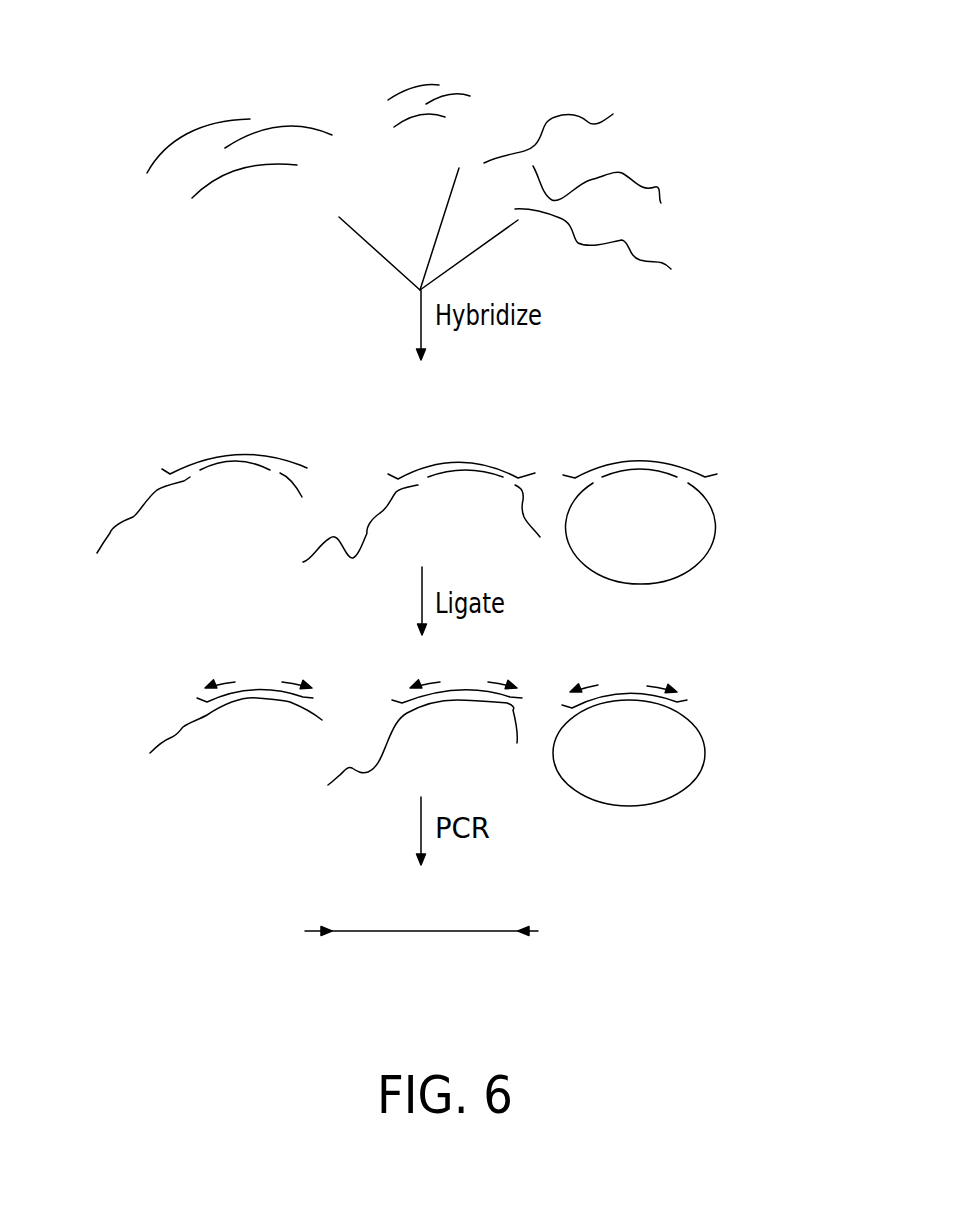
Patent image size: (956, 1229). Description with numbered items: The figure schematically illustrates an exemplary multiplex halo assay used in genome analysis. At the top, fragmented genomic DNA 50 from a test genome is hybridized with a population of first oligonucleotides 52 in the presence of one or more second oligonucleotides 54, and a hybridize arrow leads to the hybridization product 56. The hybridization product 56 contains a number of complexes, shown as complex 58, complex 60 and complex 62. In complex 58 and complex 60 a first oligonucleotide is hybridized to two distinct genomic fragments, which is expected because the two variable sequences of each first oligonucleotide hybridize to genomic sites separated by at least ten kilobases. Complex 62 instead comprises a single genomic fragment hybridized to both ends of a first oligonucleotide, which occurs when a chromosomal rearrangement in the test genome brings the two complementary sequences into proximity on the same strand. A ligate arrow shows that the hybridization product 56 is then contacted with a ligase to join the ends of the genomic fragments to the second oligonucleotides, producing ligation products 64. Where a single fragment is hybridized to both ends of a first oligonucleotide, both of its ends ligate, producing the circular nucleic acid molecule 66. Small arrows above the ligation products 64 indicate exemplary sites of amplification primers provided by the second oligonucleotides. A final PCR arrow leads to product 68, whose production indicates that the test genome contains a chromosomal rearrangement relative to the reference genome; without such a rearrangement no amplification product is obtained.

The fragmented genomic DNA 50 is at (712, 80).
The first oligonucleotides 52 is at (178, 108).
The second oligonucleotides 54 is at (402, 66).
The hybridization product 56 is at (712, 434).
The complex 58 is at (230, 455).
The complex 60 is at (462, 462).
The complex 62 is at (637, 460).
The ligation products 64 is at (670, 645).
The circular nucleic acid molecule 66 is at (705, 755).
The product 68 is at (480, 890).